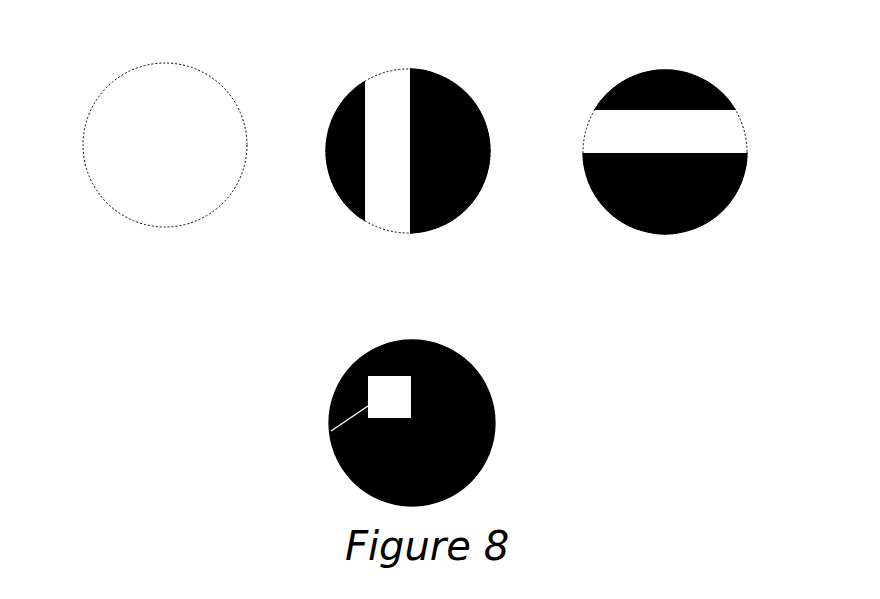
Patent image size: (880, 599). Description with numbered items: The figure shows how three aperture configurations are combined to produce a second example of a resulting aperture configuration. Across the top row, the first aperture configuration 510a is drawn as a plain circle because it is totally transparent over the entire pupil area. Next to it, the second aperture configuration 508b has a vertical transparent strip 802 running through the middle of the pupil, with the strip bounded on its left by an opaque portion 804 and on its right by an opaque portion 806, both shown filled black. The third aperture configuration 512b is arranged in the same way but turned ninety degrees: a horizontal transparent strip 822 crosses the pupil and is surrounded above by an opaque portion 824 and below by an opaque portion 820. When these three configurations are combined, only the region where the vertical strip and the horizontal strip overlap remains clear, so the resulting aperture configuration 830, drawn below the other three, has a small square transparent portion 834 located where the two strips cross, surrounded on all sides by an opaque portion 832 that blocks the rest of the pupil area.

The first aperture configuration 510a is at (95, 83).
The second aperture configuration 508b is at (379, 158).
The opaque portion 804 is at (322, 120).
The vertical transparent strip 802 is at (375, 212).
The opaque portion 806 is at (418, 223).
The third aperture configuration 512b is at (634, 135).
The opaque portion 824 is at (685, 67).
The horizontal transparent strip 822 is at (580, 127).
The opaque portion 820 is at (603, 208).
The resulting aperture configuration 830 is at (431, 411).
The opaque portion 832 is at (483, 448).
The square transparent portion 834 is at (323, 423).